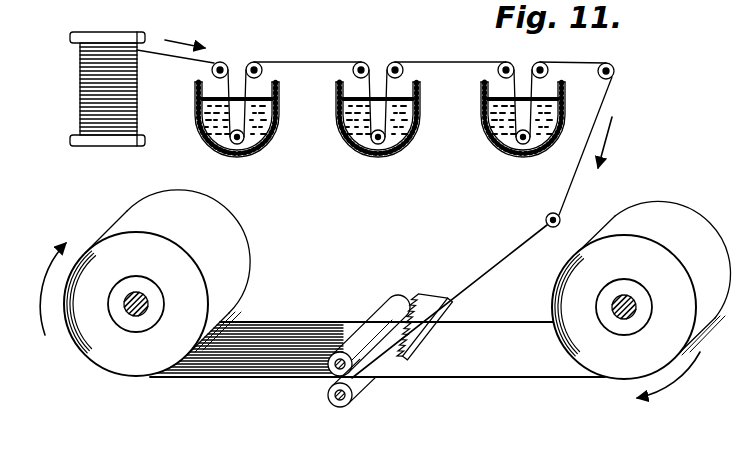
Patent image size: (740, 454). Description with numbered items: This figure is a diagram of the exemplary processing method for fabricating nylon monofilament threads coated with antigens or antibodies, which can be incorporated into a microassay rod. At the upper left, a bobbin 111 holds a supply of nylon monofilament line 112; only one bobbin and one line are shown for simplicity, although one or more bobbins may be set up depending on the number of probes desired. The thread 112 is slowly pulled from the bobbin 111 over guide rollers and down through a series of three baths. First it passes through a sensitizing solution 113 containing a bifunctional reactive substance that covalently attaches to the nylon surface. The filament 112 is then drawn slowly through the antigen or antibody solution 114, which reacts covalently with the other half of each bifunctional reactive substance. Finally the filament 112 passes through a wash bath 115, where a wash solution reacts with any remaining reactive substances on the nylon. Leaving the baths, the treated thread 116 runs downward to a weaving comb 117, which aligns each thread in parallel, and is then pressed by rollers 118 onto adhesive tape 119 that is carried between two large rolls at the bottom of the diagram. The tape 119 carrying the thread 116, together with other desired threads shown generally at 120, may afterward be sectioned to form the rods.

The bobbin 111 is at (105, 34).
The nylon monofilament line 112 is at (80, 88).
The sensitizing solution 113 is at (262, 123).
The antigen or antibody solution 114 is at (407, 120).
The wash bath 115 is at (548, 125).
The treated thread 116 is at (497, 270).
The weaving comb 117 is at (437, 303).
The rollers 118 is at (378, 315).
The adhesive tape 119 is at (538, 362).
The other desired threads 120 is at (225, 378).